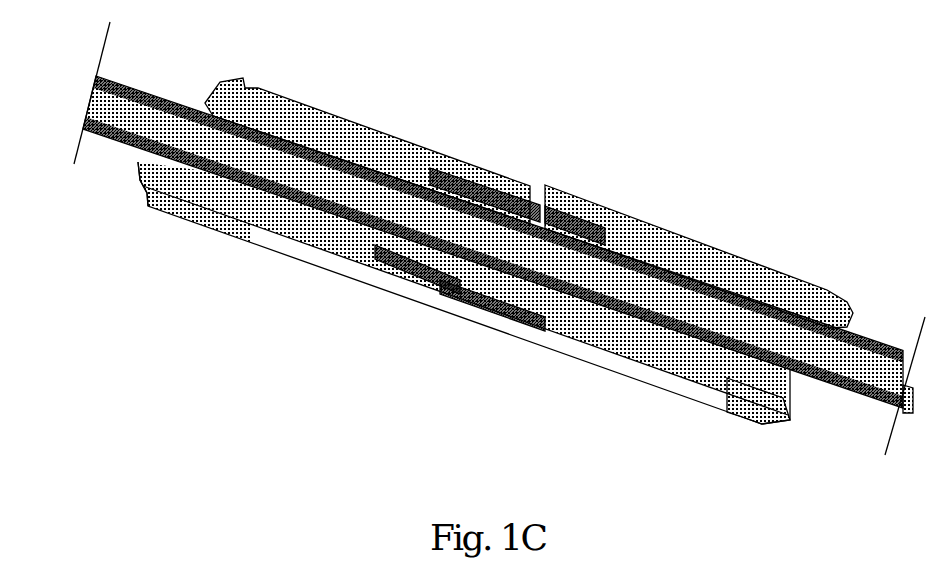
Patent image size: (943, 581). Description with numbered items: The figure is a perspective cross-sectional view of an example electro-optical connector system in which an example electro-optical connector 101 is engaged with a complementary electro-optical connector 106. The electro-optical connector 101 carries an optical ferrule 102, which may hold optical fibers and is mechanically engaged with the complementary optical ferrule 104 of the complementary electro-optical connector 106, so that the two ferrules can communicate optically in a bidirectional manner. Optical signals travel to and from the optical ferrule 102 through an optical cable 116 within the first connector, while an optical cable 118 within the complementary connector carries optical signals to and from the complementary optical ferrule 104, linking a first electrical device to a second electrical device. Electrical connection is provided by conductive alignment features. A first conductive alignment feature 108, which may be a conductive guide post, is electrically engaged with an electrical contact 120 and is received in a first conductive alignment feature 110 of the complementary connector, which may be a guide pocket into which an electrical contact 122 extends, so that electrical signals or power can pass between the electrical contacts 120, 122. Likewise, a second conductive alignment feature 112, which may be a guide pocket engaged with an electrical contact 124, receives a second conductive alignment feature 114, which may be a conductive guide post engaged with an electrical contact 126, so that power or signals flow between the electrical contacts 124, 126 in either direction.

The electro-optical connector 101 is at (495, 236).
The optical ferrule 102 is at (392, 282).
The complementary optical ferrule 104 is at (540, 248).
The complementary electro-optical connector 106 is at (612, 390).
The first conductive alignment feature 108 is at (462, 278).
The first conductive alignment feature of the complementary connector 110 is at (532, 300).
The second conductive alignment feature 112 is at (440, 168).
The second conductive alignment feature of the complementary connector 114 is at (537, 200).
The optical cable 116 is at (132, 112).
The optical cable 118 is at (855, 370).
The electrical contact 120 is at (278, 195).
The electrical contact 122 is at (727, 375).
The electrical contact 124 is at (307, 137).
The electrical contact 126 is at (705, 278).